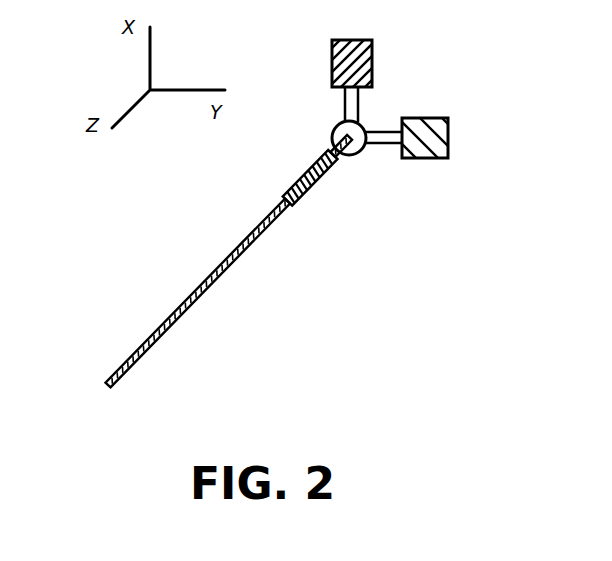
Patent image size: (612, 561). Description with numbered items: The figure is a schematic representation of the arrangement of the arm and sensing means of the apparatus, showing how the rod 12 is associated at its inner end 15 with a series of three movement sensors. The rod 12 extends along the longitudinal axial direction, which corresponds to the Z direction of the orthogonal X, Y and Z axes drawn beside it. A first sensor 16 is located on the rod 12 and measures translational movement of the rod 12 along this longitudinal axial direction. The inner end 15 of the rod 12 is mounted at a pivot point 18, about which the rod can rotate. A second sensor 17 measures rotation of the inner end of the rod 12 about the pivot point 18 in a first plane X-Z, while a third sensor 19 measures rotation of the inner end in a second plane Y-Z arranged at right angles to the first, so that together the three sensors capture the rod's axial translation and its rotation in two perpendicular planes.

The rod 12 is at (152, 348).
The inner end 15 is at (252, 243).
The first sensor 16 is at (317, 187).
The second sensor 17 is at (448, 130).
The pivot point 18 is at (365, 155).
The third sensor 19 is at (372, 50).